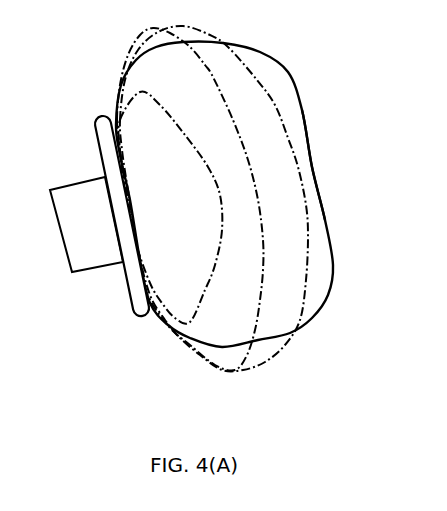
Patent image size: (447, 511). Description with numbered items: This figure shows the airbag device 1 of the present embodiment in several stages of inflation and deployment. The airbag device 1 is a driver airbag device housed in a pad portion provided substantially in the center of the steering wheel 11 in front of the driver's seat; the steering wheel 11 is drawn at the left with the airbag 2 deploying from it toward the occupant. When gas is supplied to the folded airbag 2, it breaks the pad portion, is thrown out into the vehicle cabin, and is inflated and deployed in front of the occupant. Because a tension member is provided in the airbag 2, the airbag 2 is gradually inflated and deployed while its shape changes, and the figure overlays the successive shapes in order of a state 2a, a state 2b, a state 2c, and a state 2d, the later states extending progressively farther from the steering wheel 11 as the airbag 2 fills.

The airbag device 1 is at (297, 22).
The airbag 2 is at (306, 123).
The state 2a is at (219, 233).
The state 2b is at (260, 290).
The state 2c is at (306, 238).
The state 2d is at (315, 172).
The steering wheel 11 is at (96, 130).